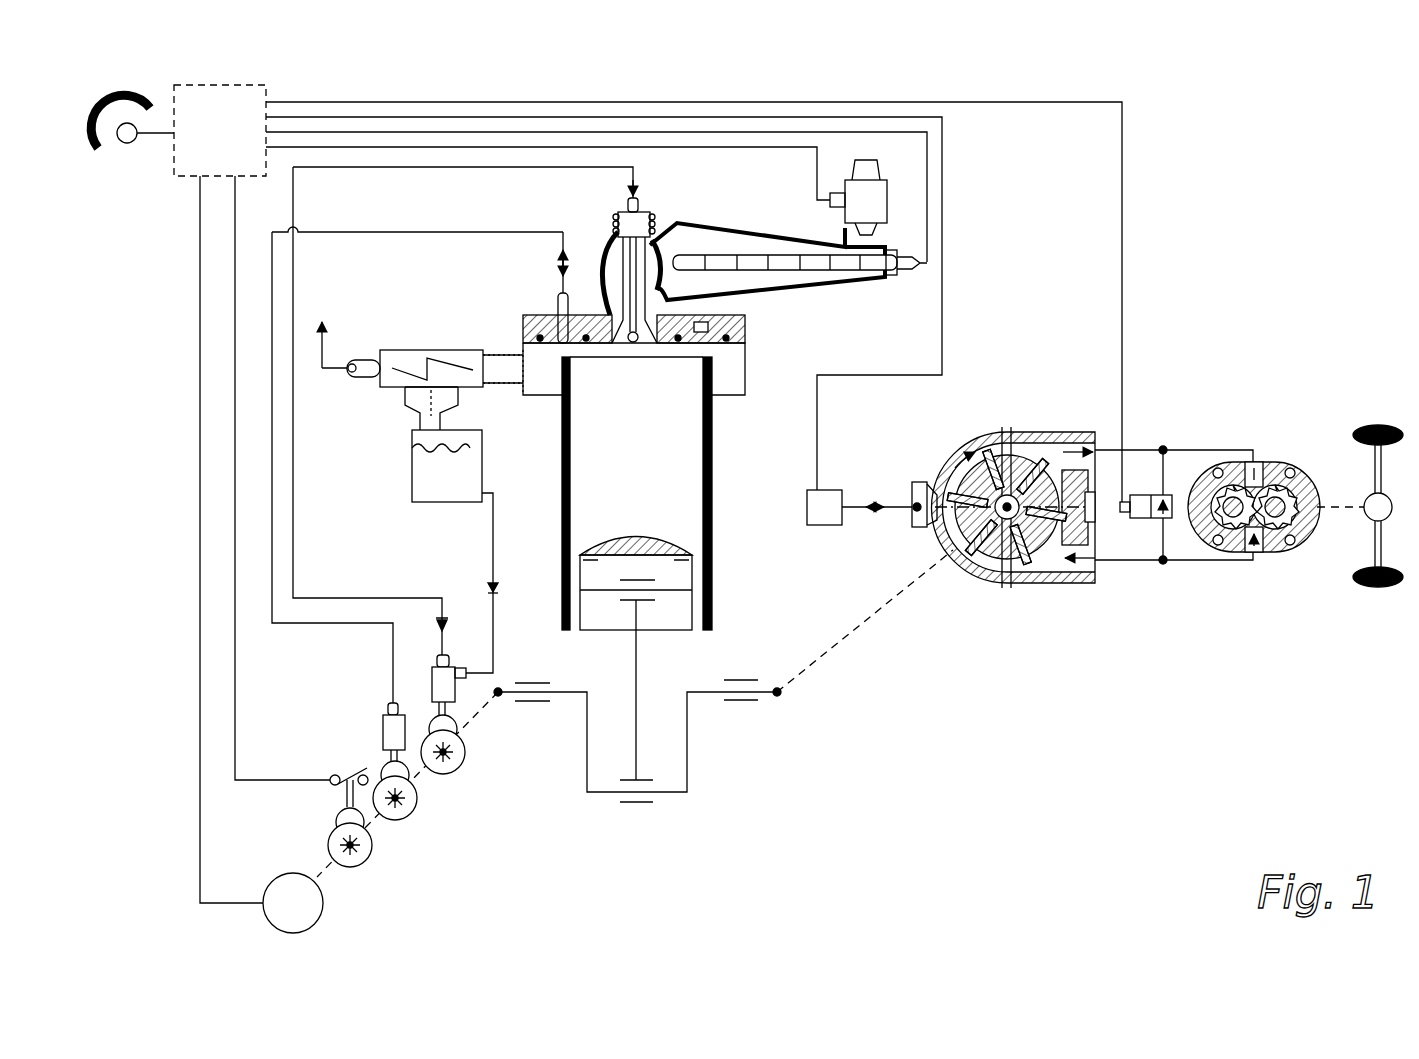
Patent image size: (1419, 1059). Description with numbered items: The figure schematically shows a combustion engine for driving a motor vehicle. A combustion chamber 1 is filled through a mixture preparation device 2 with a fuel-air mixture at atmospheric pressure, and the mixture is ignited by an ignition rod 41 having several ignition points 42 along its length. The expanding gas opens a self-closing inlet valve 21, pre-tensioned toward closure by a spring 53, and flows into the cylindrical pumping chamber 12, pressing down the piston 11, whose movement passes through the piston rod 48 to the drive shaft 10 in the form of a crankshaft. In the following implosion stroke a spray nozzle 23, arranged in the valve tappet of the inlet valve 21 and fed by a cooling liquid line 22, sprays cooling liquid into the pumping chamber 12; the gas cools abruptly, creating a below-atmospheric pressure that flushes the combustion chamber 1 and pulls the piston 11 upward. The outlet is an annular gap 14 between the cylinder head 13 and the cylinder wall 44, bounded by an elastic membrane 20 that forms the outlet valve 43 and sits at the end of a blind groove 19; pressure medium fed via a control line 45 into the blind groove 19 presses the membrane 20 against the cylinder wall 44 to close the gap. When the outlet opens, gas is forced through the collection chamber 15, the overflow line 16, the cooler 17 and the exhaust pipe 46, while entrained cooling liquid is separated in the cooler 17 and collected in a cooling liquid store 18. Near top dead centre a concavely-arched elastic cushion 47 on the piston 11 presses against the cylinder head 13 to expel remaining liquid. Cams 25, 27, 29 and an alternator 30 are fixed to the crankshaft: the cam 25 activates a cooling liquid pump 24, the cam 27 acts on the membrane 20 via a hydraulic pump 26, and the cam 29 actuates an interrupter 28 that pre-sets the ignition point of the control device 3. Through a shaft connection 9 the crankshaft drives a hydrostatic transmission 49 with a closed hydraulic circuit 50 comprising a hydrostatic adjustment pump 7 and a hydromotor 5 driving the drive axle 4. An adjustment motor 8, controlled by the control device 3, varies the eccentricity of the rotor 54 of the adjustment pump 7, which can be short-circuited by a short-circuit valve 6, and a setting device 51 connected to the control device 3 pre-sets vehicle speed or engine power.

The combustion chamber 1 is at (773, 253).
The mixture preparation device 2 is at (890, 176).
The control device 3 is at (203, 140).
The drive axle 4 is at (1367, 470).
The hydromotor 5 is at (1283, 572).
The short-circuit valve 6 is at (1137, 493).
The hydrostatic adjustment pump 7 is at (1037, 583).
The adjustment motor 8 is at (1023, 600).
The shaft connection 9 is at (824, 525).
The drive shaft 10 is at (673, 793).
The piston 11 is at (672, 613).
The pumping chamber 12 is at (662, 500).
The cylinder head 13 is at (523, 322).
The annular gap 14 is at (722, 357).
The collection chamber 15 is at (732, 390).
The overflow line 16 is at (523, 324).
The cooler 17 is at (398, 377).
The cooling liquid store 18 is at (432, 473).
The blind groove 19 is at (720, 347).
The elastic membrane 20 is at (523, 315).
The inlet valve 21 is at (710, 243).
The cooling liquid line 22 is at (535, 166).
The spray nozzle 23 is at (618, 230).
The pump 24 is at (455, 702).
The cam 25 is at (403, 748).
The hydraulic pump 26 is at (455, 773).
The cam 27 is at (409, 817).
The interrupter 28 is at (357, 790).
The cam 29 is at (368, 861).
The alternator 30 is at (305, 931).
The ignition rod 41 is at (823, 256).
The ignition points 42 is at (813, 256).
The outlet valve 43 is at (737, 385).
The cylinder wall 44 is at (868, 620).
The control line 45 is at (363, 232).
The exhaust pipe 46 is at (313, 345).
The concavely-arched elastic cushion 47 is at (500, 527).
The piston rod 48 is at (636, 683).
The hydrostatic transmission 49 is at (1160, 582).
The closed hydraulic circuit 50 is at (1223, 560).
The setting device 51 is at (127, 143).
The spring 53 is at (657, 243).
The rotor 54 is at (1090, 575).